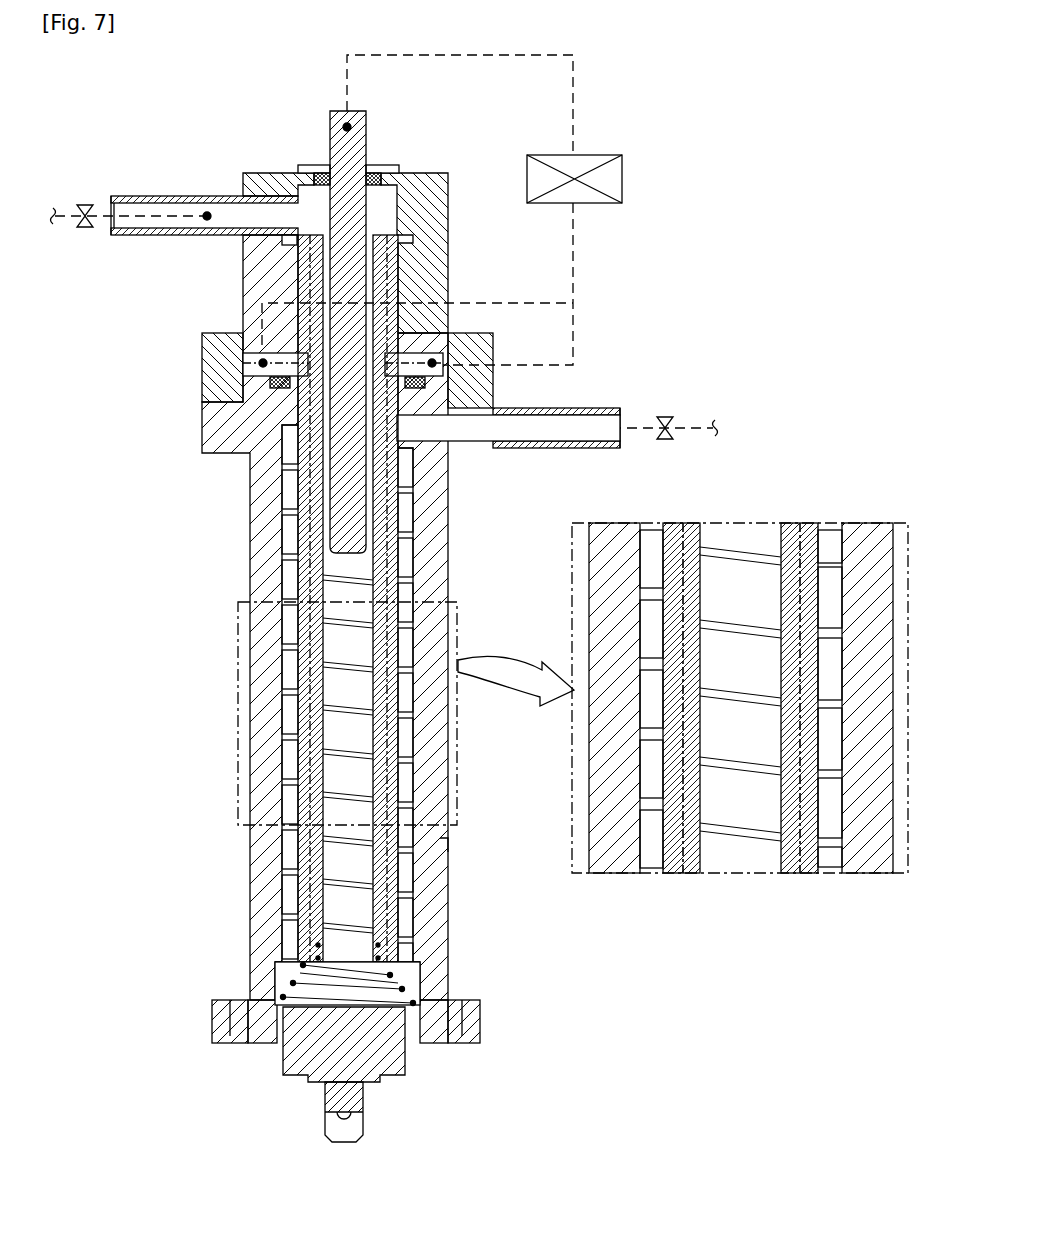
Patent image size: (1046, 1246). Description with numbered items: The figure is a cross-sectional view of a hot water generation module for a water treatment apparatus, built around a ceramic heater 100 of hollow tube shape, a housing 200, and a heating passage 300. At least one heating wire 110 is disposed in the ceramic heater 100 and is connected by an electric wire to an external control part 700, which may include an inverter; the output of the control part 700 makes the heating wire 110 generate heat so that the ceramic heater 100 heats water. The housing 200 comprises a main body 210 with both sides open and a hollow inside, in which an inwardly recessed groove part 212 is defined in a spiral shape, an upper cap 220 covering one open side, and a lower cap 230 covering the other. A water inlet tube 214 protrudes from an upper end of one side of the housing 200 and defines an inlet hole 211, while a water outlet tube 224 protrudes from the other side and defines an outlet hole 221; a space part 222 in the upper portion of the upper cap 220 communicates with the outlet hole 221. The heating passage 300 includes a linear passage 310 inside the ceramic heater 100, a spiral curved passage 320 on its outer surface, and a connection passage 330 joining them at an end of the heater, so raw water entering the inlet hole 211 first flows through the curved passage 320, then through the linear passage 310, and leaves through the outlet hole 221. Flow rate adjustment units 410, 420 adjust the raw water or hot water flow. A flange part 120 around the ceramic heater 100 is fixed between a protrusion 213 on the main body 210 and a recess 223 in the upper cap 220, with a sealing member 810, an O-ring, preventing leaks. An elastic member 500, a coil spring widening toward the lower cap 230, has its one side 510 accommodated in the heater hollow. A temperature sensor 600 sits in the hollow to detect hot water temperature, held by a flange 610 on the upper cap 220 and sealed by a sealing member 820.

The ceramic heater 100 is at (380, 582).
The heating wire 110 is at (395, 550).
The flange part 120 is at (435, 355).
The housing 200 is at (128, 402).
The main body 210 is at (262, 497).
The inlet hole 211 is at (473, 433).
The groove part 212 is at (630, 622).
The protrusion 213 is at (470, 360).
The water inlet tube 214 is at (565, 452).
The upper cap 220 is at (341, 276).
The outlet hole 221 is at (265, 215).
The space part 222 is at (385, 212).
The recess 223 is at (235, 335).
The water outlet tube 224 is at (160, 196).
The lower cap 230 is at (285, 1000).
The heating passage 300 is at (502, 872).
The linear passage 310 is at (352, 915).
The curved passage 320 is at (403, 880).
The connection passage 330 is at (405, 965).
The flow rate adjustment unit 410 is at (665, 415).
The flow rate adjustment unit 420 is at (85, 205).
The elastic member 500 is at (408, 990).
The one side of the elastic member 510 is at (440, 845).
The temperature sensor 600 is at (350, 280).
The flange 610 is at (373, 172).
The control part 700 is at (622, 178).
The sealing member 810 is at (215, 345).
The sealing member 820 is at (320, 172).